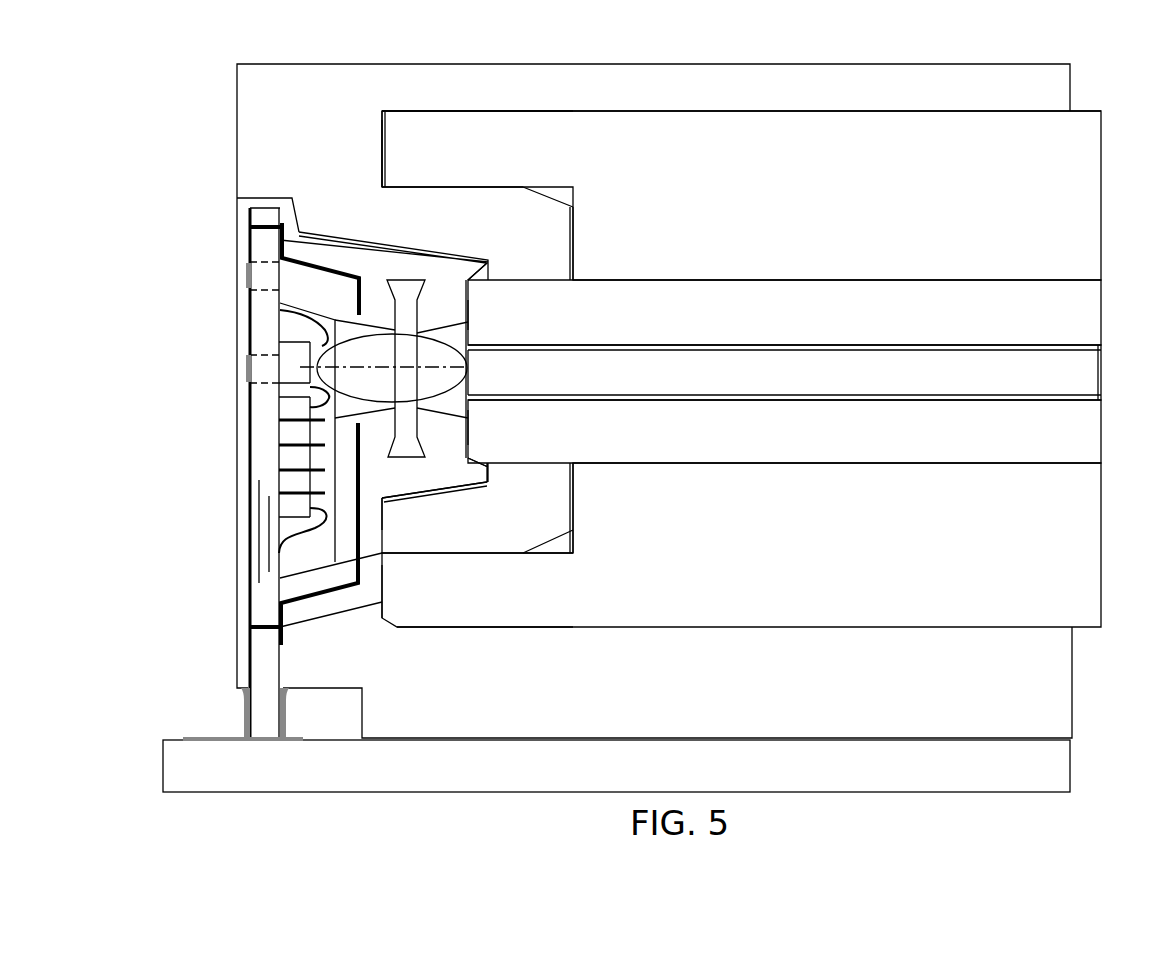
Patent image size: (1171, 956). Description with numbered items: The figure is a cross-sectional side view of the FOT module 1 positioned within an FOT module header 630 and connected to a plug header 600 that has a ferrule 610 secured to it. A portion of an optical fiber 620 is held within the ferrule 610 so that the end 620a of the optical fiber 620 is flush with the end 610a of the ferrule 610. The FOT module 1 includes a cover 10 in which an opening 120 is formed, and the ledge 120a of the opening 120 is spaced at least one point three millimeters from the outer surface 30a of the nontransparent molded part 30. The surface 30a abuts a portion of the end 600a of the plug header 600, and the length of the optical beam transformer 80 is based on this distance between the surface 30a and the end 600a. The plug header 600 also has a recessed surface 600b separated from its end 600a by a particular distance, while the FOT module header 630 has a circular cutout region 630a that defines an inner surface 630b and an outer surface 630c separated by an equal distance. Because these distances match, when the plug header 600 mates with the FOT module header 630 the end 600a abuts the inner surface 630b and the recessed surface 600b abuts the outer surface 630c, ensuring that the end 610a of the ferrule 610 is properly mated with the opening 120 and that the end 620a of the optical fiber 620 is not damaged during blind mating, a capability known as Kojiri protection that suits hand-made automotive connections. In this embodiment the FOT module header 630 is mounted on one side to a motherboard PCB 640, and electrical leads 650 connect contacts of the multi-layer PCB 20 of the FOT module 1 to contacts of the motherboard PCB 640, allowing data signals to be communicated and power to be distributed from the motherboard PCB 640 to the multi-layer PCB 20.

The FOT module 1 is at (430, 241).
The cover 10 is at (447, 488).
The multi-layer PCB 20 is at (268, 672).
The nontransparent molded part 30 is at (440, 243).
The outer surface 30a is at (384, 511).
The optical beam transformer 80 is at (393, 393).
The opening 120 is at (494, 288).
The ledge 120a is at (467, 284).
The plug header 600 is at (863, 210).
The end 600a is at (387, 162).
The recessed surface 600b is at (577, 247).
The ferrule 610 is at (838, 330).
The end 610a is at (472, 313).
The optical fiber 620 is at (808, 382).
The end 620a is at (472, 370).
The FOT module header 630 is at (713, 104).
The circular cutout region 630a is at (503, 104).
The inner surface 630b is at (379, 132).
The outer surface 630c is at (570, 217).
The motherboard PCB 640 is at (685, 772).
The electrical leads 650 is at (246, 699).